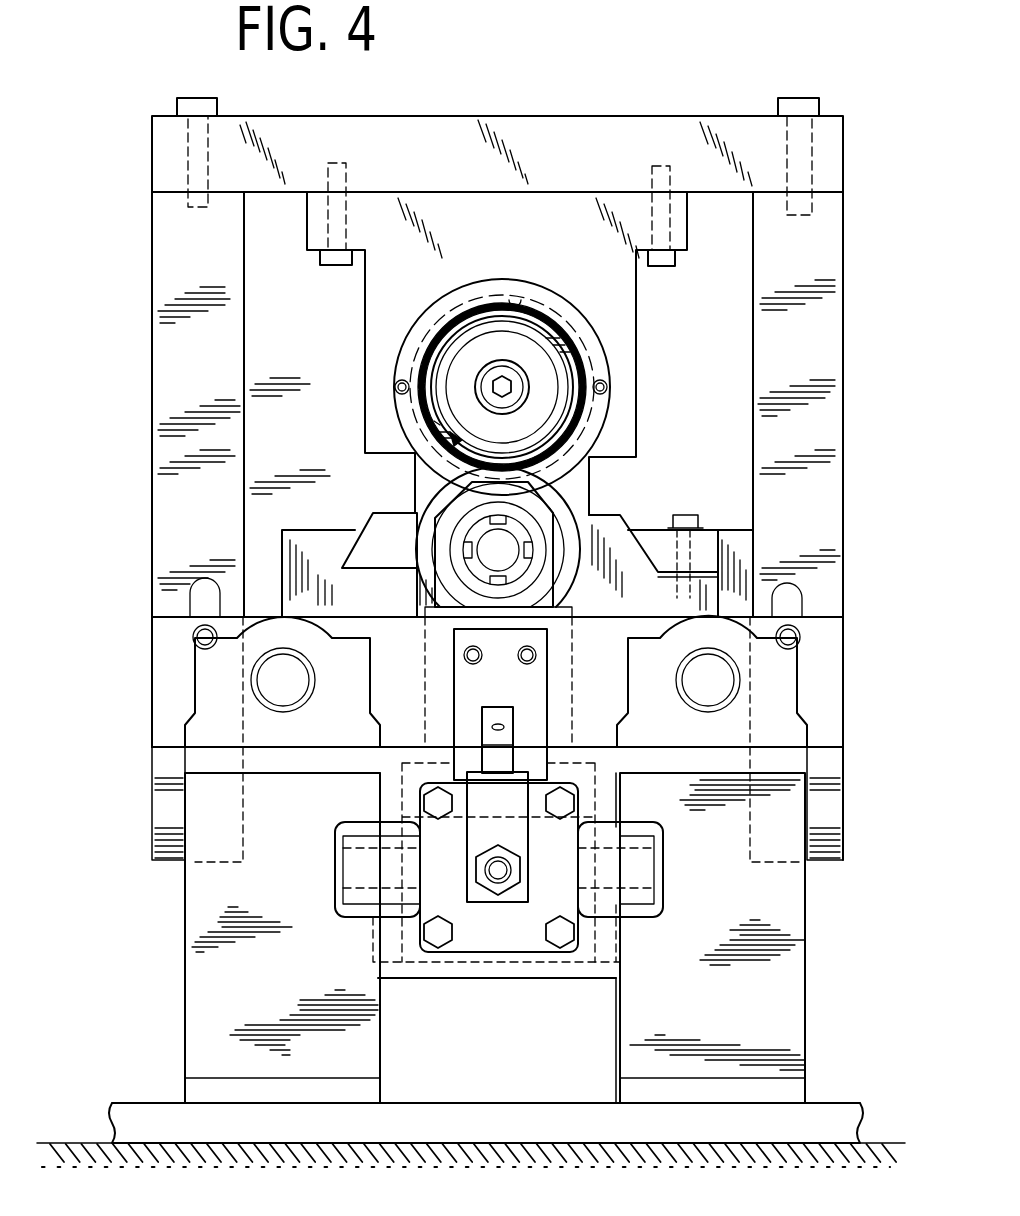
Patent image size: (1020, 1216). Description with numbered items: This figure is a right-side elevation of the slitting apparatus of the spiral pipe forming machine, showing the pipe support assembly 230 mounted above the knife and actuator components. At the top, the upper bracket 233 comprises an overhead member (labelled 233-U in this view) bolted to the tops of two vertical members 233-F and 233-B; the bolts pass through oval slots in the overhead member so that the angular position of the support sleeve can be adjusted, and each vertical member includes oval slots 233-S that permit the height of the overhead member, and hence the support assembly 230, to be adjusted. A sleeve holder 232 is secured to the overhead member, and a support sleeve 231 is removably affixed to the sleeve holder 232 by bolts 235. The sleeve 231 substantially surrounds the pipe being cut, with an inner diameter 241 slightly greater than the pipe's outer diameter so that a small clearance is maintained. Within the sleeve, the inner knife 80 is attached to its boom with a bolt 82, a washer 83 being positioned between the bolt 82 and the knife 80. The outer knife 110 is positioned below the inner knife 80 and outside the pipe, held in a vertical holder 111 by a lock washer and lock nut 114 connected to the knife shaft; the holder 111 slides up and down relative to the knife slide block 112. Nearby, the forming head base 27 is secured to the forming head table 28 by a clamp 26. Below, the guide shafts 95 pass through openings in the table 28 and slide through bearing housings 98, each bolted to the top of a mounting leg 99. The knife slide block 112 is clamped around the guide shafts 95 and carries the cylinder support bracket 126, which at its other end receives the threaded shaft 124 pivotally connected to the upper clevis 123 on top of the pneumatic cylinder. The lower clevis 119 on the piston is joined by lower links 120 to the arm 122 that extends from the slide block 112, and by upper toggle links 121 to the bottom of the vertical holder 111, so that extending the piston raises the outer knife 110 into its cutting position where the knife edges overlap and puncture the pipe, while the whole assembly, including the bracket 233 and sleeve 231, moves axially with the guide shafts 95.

The upper bracket 233 is at (486, 458).
The upper frame member 233-U is at (678, 127).
The vertical member 233-F is at (248, 352).
The vertical member 233-B is at (836, 346).
The oval slots 233-S is at (190, 602).
The pipe support assembly 230 is at (333, 281).
The sleeve holder 232 is at (628, 302).
The inner diameter 241 is at (514, 300).
The support sleeve 231 is at (595, 350).
The inner knife 80 is at (545, 378).
The washer 83 is at (528, 398).
The bolt 82 is at (512, 400).
The bolts 235 is at (395, 387).
The outer knife 110 is at (560, 472).
The vertical holder 111 is at (552, 512).
The lock washer and lock nut 114 is at (528, 578).
The forming head base 27 is at (385, 512).
The forming head table 28 is at (336, 556).
The clamp 26 is at (713, 532).
The bearing housings 98 is at (222, 680).
The guide shafts 95 is at (283, 692).
The knife slide block 112 is at (826, 683).
The cylinder support bracket 126 is at (518, 694).
The threaded shaft 124 is at (505, 873).
The upper toggle links 121 is at (410, 867).
The upper clevis 123 is at (448, 903).
The lower clevis 119 is at (353, 866).
The lower links 120 is at (378, 913).
The arm 122 is at (580, 967).
The mounting legs 99 is at (796, 1000).